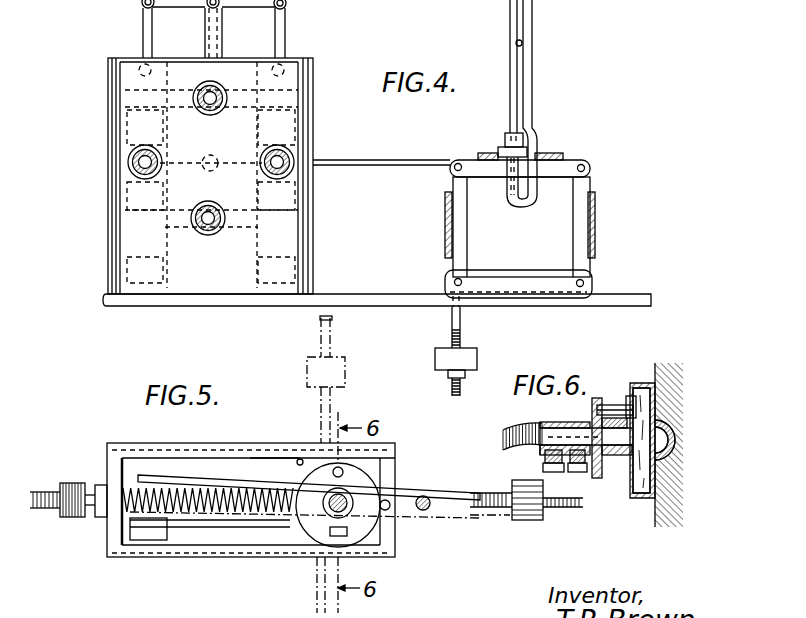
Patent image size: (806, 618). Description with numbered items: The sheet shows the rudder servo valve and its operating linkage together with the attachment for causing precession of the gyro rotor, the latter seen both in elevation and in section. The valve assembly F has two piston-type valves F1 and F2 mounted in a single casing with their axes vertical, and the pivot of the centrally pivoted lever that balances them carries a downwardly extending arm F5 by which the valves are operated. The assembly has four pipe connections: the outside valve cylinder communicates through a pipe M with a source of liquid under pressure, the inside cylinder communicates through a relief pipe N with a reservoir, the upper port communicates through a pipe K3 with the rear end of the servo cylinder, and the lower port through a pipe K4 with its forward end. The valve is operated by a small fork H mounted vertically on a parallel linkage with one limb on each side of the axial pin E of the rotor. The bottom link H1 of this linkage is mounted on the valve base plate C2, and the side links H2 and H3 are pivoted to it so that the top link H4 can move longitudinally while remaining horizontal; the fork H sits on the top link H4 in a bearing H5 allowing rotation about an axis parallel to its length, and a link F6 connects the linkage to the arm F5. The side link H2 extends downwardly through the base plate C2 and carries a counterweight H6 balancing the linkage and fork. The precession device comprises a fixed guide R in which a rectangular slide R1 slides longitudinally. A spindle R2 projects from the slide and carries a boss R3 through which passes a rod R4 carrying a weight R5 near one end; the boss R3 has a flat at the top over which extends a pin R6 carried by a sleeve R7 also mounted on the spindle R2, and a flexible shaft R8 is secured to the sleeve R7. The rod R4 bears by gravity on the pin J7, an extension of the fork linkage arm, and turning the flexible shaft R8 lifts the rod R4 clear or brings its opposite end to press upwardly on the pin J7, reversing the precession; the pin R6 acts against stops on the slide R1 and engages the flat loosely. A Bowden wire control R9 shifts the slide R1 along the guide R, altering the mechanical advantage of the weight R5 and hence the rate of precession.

In FIG. 4, the valve base plate C2 is at (385, 298).
In FIG. 4, the valve assembly F is at (119, 82).
In FIG. 4, the valve F1 is at (134, 101).
In FIG. 4, the valve F2 is at (284, 92).
In FIG. 4, the downwardly extending arm F5 is at (204, 156).
In FIG. 4, the link F6 is at (396, 166).
In FIG. 4, the pipe K3 is at (216, 92).
In FIG. 4, the pipe K4 is at (211, 233).
In FIG. 4, the pipe M is at (128, 162).
In FIG. 4, the relief pipe N is at (292, 158).
In FIG. 4, the fork H is at (510, 30).
In FIG. 4, the pin E is at (522, 43).
In FIG. 4, the bearing H5 is at (501, 150).
In FIG. 4, the top link H4 is at (570, 159).
In FIG. 4, the bottom link H1 is at (535, 284).
In FIG. 4, the side link H2 is at (456, 231).
In FIG. 4, the side link H3 is at (586, 229).
In FIG. 4, the counterweight H6 is at (478, 358).
In FIG. 5, the fixed guide R is at (358, 452).
In FIG. 6, the fixed guide R is at (643, 488).
In FIG. 5, the rectangular slide R1 is at (372, 536).
In FIG. 6, the rectangular slide R1 is at (637, 491).
In FIG. 6, the spindle R2 is at (608, 444).
In FIG. 5, the boss R3 is at (282, 452).
In FIG. 6, the boss R3 is at (595, 421).
In FIG. 5, the rod R4 is at (409, 492).
In FIG. 6, the rod R4 is at (614, 420).
In FIG. 5, the weight R5 is at (152, 536).
In FIG. 6, the weight R5 is at (522, 520).
In FIG. 5, the pin R6 is at (297, 457).
In FIG. 6, the pin R6 is at (628, 383).
In FIG. 5, the sleeve R7 is at (352, 505).
In FIG. 6, the sleeve R7 is at (538, 455).
In FIG. 5, the flexible shaft R8 is at (327, 517).
In FIG. 6, the flexible shaft R8 is at (516, 433).
In FIG. 5, the Bowden wire control R9 is at (183, 513).
In FIG. 5, the pin J7 is at (432, 508).